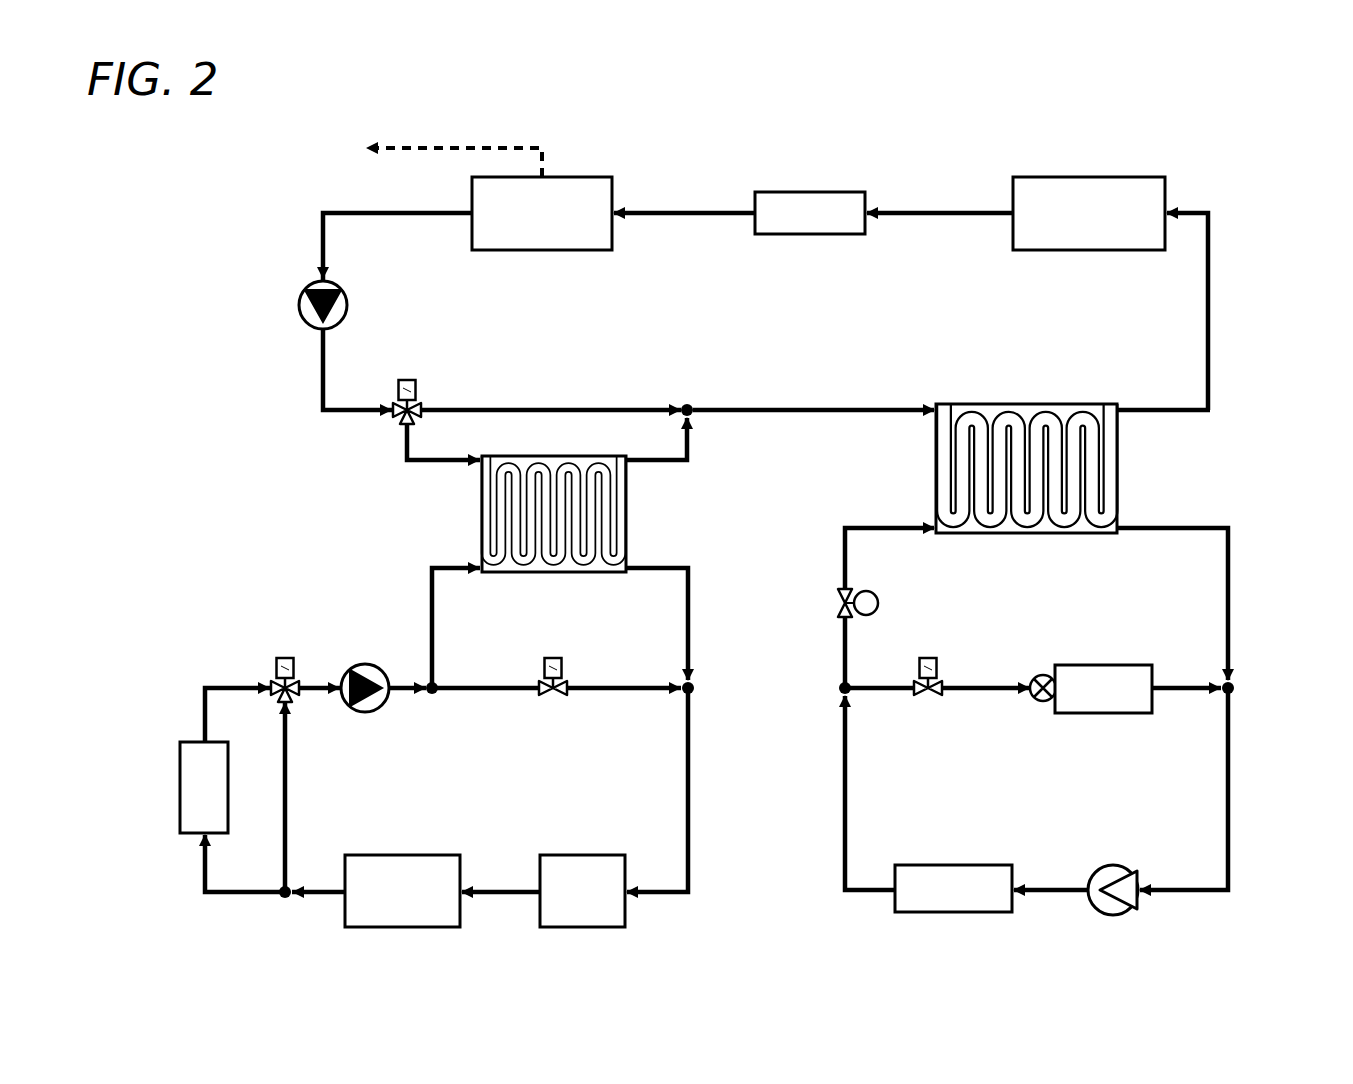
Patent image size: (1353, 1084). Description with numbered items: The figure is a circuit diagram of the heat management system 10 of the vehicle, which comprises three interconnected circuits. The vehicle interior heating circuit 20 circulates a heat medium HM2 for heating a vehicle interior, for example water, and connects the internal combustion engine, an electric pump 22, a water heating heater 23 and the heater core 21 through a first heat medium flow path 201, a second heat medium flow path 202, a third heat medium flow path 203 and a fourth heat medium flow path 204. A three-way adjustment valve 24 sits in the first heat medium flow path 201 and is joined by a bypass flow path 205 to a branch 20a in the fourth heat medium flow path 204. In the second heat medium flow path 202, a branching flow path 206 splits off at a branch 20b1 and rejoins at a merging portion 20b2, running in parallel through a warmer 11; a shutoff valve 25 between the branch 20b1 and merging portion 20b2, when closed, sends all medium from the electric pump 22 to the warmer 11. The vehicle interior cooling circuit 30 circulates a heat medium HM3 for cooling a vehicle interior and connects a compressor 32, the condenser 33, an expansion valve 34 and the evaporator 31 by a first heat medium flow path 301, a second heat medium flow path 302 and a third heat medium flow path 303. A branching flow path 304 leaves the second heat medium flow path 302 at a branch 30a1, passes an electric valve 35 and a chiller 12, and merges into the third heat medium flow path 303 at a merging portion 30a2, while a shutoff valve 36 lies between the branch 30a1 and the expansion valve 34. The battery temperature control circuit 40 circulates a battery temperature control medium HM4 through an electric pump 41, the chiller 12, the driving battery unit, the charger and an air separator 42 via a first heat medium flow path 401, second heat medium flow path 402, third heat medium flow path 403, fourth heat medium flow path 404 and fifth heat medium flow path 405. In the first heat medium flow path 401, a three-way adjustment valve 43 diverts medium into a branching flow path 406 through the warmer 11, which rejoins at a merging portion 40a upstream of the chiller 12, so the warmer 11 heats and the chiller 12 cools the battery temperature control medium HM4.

The heat management system 10 is at (218, 183).
The warmer 11 is at (480, 526).
The chiller 12 is at (935, 474).
The vehicle interior heating circuit 20 is at (279, 581).
The branch 20a is at (283, 889).
The branch 20b1 is at (432, 697).
The merging portion 20b2 is at (694, 688).
The heater core 21 is at (403, 854).
The electric pump 22 is at (365, 664).
The water heating heater 23 is at (582, 854).
The three-way adjustment valve 24 is at (285, 656).
The shutoff valve 25 is at (553, 660).
The first heat medium flow path 201 is at (213, 686).
The second heat medium flow path 202 is at (640, 686).
The third heat medium flow path 203 is at (507, 890).
The fourth heat medium flow path 204 is at (235, 895).
The bypass flow path 205 is at (288, 800).
The branching flow path 206 is at (667, 566).
The vehicle interior cooling circuit 30 is at (1277, 536).
The branch 30a1 is at (840, 688).
The merging portion 30a2 is at (1234, 688).
The evaporator 31 is at (1105, 664).
The compressor 32 is at (1115, 865).
The condenser 33 is at (955, 864).
The expansion valve 34 is at (1042, 674).
The electric valve 35 is at (879, 601).
The shutoff valve 36 is at (928, 658).
The first heat medium flow path 301 is at (1057, 888).
The second heat medium flow path 302 is at (849, 770).
The third heat medium flow path 303 is at (1180, 696).
The branching flow path 304 is at (1190, 527).
The battery temperature control circuit 40 is at (1216, 166).
The merging portion 40a is at (685, 405).
The electric pump 41 is at (348, 303).
The air separator 42 is at (582, 177).
The three-way adjustment valve 43 is at (413, 380).
The first heat medium flow path 401 is at (321, 380).
The second heat medium flow path 402 is at (1210, 321).
The third heat medium flow path 403 is at (935, 212).
The fourth heat medium flow path 404 is at (682, 212).
The fifth heat medium flow path 405 is at (338, 212).
The branching flow path 406 is at (681, 463).
The heat medium for heating a vehicle interior HM2 is at (691, 893).
The heat medium for cooling a vehicle interior HM3 is at (1231, 890).
The battery temperature control medium HM4 is at (1211, 411).